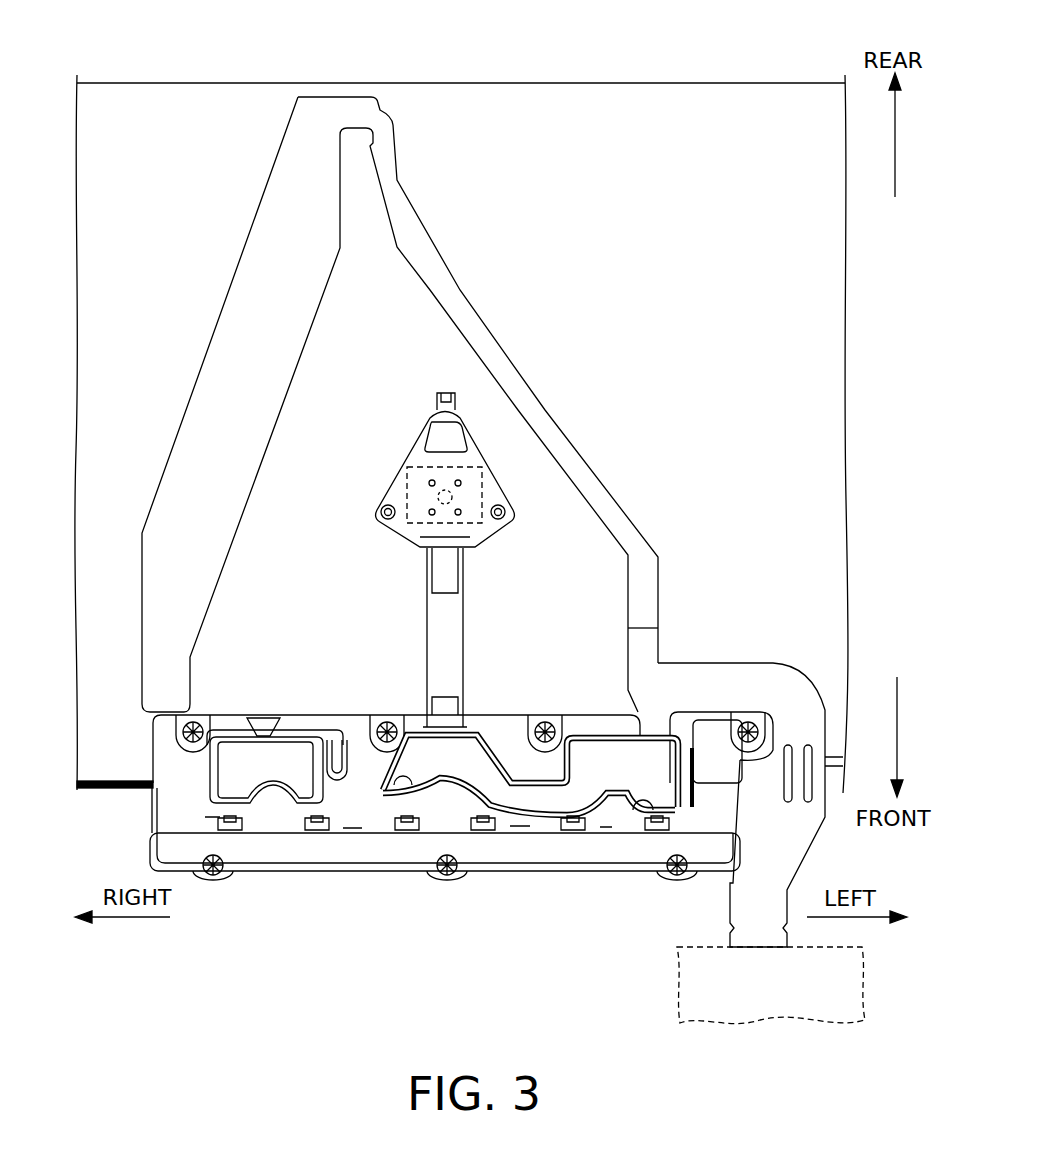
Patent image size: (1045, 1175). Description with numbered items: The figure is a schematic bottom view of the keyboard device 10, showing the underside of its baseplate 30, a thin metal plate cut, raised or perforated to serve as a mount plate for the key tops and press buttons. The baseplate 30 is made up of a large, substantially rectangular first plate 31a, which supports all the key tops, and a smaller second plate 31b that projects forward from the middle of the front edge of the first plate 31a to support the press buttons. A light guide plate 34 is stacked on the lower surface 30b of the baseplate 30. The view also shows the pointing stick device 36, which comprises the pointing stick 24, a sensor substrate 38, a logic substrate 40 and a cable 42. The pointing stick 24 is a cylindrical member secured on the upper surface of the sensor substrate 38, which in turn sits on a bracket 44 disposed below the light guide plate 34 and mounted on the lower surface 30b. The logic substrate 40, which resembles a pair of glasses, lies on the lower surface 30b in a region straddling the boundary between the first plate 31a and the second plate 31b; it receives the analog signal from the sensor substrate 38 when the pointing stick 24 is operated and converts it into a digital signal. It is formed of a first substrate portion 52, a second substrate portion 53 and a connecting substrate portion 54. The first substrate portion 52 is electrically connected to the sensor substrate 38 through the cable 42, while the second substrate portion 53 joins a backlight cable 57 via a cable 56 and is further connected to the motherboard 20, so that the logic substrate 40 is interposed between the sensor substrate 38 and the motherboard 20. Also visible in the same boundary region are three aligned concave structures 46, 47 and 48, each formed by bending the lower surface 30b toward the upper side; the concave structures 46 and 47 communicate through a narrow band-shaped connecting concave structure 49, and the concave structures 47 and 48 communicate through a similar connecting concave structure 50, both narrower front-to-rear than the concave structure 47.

The keyboard device 10 is at (75, 41).
The motherboard 20 is at (867, 990).
The pointing stick 24 is at (407, 497).
The baseplate 30 is at (147, 802).
The lower surface 30b is at (827, 478).
The first plate 31a is at (100, 797).
The second plate 31b is at (347, 872).
The light guide plate 34 is at (827, 422).
The pointing stick device 36 is at (475, 398).
The sensor substrate 38 is at (487, 483).
The logic substrate 40 is at (452, 938).
The cable 42 is at (450, 613).
The bracket 44 is at (405, 447).
The concave structure 46 is at (655, 800).
The concave structure 47 is at (400, 800).
The concave structure 48 is at (260, 773).
The connecting concave structure 49 is at (521, 712).
The connecting concave structure 50 is at (358, 752).
The first substrate portion 52 is at (445, 765).
The second substrate portion 53 is at (617, 780).
The connecting substrate portion 54 is at (537, 803).
The cable 56 is at (705, 678).
The backlight cable 57 is at (448, 290).